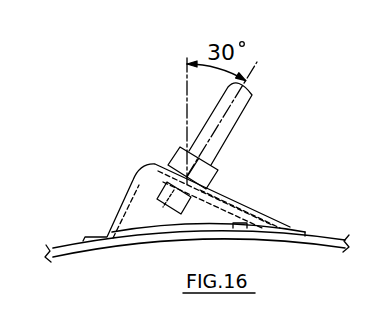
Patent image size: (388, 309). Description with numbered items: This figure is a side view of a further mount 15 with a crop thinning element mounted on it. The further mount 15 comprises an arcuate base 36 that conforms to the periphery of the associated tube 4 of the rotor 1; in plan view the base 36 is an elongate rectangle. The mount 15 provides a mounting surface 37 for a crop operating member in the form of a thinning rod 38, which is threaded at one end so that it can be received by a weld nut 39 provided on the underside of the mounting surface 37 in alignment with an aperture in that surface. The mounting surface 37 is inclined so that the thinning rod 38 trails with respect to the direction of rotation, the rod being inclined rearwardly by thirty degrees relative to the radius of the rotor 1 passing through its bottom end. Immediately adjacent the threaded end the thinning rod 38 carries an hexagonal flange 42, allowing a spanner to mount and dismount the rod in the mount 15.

The rotor 1 is at (322, 226).
The tube 4 is at (312, 243).
The further mount 15 is at (102, 205).
The arcuate base 36 is at (160, 230).
The mounting surface 37 is at (247, 203).
The thinning rod 38 is at (238, 132).
The weld nut 39 is at (163, 198).
The hexagonal flange 42 is at (218, 173).